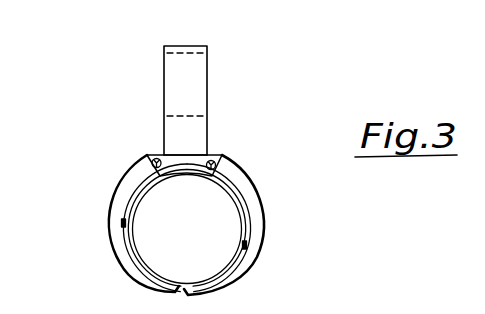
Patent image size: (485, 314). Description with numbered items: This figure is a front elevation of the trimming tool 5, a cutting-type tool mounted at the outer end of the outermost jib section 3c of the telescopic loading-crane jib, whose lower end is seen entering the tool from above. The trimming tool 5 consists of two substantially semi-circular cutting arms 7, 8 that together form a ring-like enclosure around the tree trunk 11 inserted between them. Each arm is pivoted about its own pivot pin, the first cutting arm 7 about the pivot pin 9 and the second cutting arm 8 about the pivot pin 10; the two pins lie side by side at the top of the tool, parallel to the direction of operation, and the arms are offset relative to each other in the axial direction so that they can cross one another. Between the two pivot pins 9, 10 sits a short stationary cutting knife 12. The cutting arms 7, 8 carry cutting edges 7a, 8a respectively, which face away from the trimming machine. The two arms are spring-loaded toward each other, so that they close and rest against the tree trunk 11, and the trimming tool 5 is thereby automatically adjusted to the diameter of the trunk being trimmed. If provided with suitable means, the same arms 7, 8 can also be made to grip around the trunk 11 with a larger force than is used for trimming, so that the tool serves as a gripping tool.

The outermost jib section 3c is at (195, 102).
The trimming tool 5 is at (68, 258).
The cutting arm 7 is at (120, 189).
The cutting edge 7a is at (123, 223).
The cutting arm 8 is at (248, 189).
The cutting edge 8a is at (245, 247).
The pivot pin 9 is at (148, 158).
The pivot pin 10 is at (222, 157).
The tree trunk 11 is at (201, 254).
The stationary cutting knife 12 is at (196, 169).